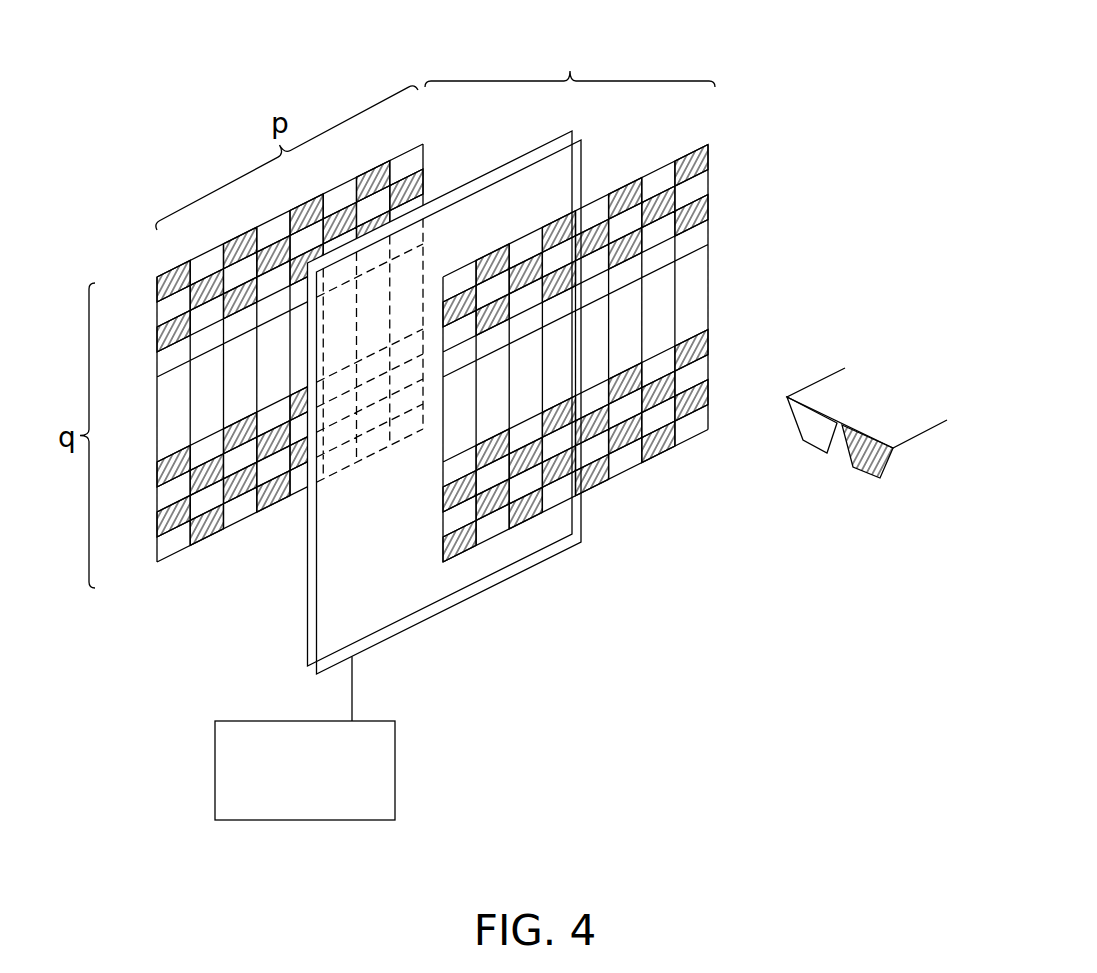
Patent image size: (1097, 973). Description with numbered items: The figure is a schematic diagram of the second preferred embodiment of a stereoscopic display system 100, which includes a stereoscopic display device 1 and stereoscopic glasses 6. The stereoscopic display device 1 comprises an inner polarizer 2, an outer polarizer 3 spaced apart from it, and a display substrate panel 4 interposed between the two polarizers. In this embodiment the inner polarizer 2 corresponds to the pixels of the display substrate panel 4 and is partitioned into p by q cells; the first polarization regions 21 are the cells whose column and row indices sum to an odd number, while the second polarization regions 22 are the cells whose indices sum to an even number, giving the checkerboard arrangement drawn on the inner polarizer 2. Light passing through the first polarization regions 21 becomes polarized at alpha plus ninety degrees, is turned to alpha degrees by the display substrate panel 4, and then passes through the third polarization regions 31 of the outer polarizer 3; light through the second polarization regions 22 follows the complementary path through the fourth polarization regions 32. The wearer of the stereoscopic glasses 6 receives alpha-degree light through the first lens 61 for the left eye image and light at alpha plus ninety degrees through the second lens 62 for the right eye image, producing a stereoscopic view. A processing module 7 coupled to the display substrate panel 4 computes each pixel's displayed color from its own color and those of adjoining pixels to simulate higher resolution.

The stereoscopic display system 100 is at (819, 97).
The stereoscopic display device 1 is at (570, 62).
The inner polarizer 2 is at (261, 385).
The first polarization regions 21 is at (164, 317).
The second polarization regions 22 is at (160, 285).
The outer polarizer 3 is at (605, 332).
The third polarization regions 31 is at (497, 260).
The fourth polarization regions 32 is at (460, 278).
The display substrate panel 4 is at (435, 622).
The stereoscopic glasses 6 is at (840, 412).
The first lens 61 is at (867, 465).
The second lens 62 is at (803, 427).
The processing module 7 is at (395, 772).